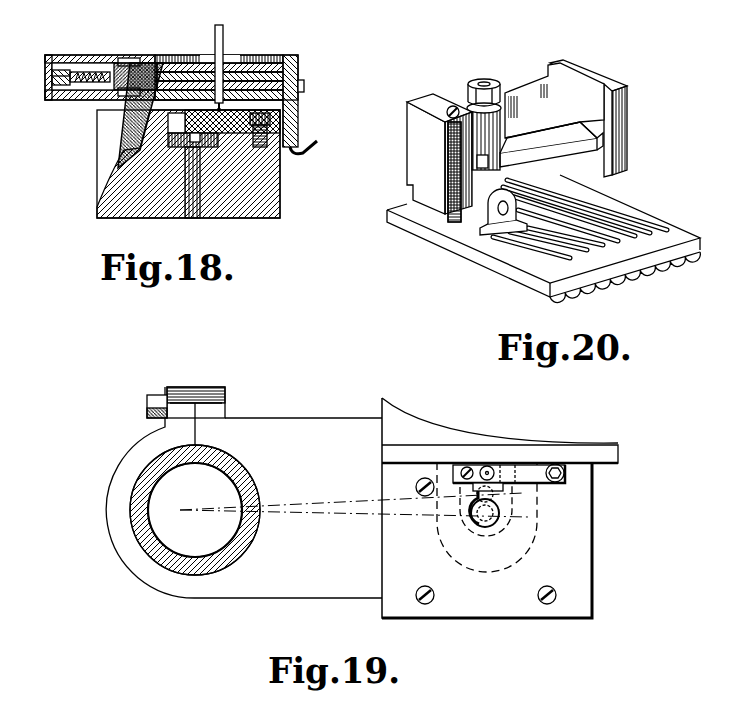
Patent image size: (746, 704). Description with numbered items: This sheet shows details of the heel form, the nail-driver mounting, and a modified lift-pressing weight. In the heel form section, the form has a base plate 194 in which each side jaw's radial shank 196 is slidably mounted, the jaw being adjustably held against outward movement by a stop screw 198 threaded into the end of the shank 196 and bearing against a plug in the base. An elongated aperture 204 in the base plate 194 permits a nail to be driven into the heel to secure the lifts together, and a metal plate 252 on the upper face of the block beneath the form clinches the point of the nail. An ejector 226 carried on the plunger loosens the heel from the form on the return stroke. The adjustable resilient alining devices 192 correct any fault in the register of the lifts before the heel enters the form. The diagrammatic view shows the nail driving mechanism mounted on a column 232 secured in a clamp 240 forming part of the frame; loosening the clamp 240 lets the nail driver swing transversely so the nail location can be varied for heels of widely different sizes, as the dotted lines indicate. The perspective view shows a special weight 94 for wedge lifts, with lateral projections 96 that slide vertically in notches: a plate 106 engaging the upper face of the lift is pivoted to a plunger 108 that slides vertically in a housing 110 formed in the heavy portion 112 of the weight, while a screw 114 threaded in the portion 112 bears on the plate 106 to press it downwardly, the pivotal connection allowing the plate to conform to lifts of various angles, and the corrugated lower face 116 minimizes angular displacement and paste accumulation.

In FIG. 18, the adjustable resilient alining devices 192 is at (127, 130).
In FIG. 18, the base plate 194 is at (168, 64).
In FIG. 18, the radial shank 196 is at (123, 78).
In FIG. 18, the stop screw 198 is at (60, 62).
In FIG. 18, the elongated aperture 204 is at (233, 60).
In FIG. 19, the elongated aperture 204 is at (498, 505).
In FIG. 18, the metal plate 252 is at (232, 128).
In FIG. 20, the weight 94 is at (503, 110).
In FIG. 20, the lateral projections 96 is at (420, 145).
In FIG. 20, the plate 106 is at (488, 237).
In FIG. 20, the plunger 108 is at (577, 163).
In FIG. 20, the housing 110 is at (488, 122).
In FIG. 20, the heavy portion 112 is at (550, 112).
In FIG. 20, the screw 114 is at (459, 224).
In FIG. 20, the corrugations 116 is at (620, 273).
In FIG. 19, the ejector 226 is at (523, 472).
In FIG. 19, the column 232 is at (227, 463).
In FIG. 19, the clamp 240 is at (180, 397).